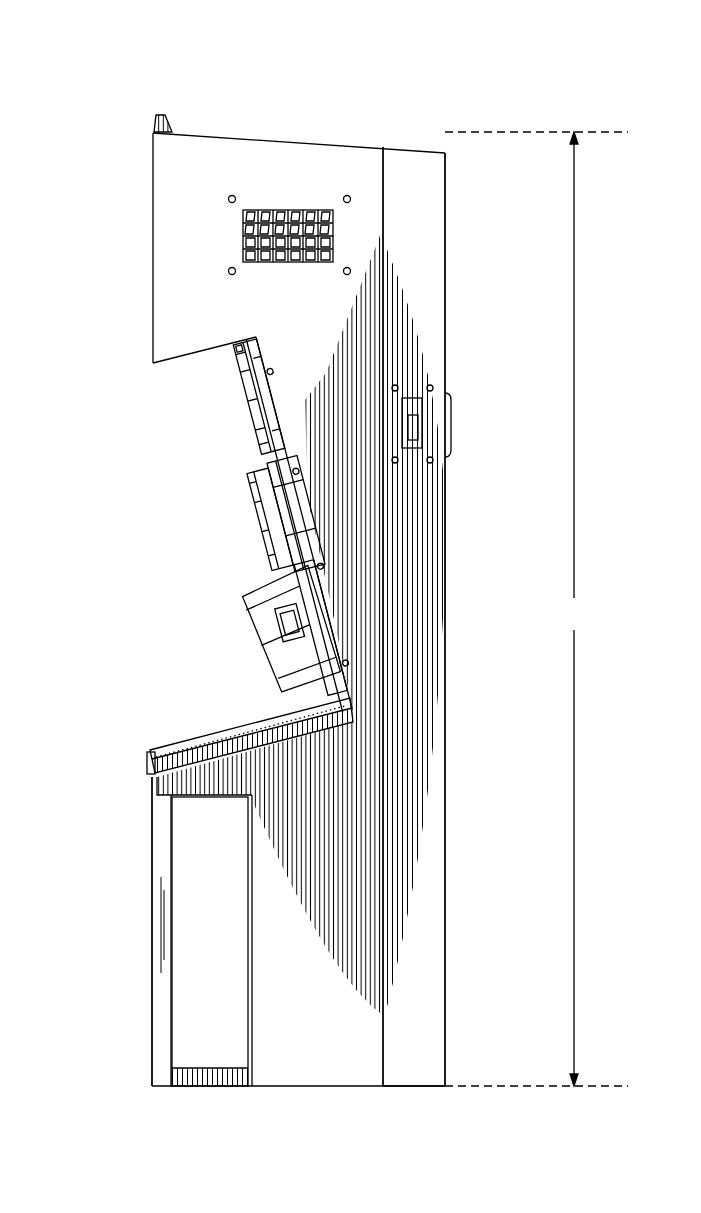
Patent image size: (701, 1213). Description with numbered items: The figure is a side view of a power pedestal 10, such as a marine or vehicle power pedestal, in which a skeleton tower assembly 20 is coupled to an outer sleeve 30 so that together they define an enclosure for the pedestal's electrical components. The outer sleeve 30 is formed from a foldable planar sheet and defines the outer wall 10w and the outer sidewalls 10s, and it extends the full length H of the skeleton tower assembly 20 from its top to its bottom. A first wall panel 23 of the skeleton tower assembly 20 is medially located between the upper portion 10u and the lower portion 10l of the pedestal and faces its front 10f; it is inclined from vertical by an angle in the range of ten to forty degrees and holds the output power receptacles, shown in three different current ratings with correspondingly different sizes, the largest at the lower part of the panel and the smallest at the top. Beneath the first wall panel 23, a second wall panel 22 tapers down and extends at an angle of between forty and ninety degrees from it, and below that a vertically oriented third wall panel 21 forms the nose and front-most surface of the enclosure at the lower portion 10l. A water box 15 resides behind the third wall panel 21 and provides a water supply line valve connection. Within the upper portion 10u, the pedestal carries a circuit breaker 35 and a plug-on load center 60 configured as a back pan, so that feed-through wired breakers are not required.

The power pedestal 10 is at (272, 72).
The upper portion 10u is at (172, 255).
The outer wall 10w is at (400, 577).
The outer sidewalls 10s is at (336, 994).
The front 10f is at (148, 880).
The lower portion 10l is at (413, 1003).
The water box 15 is at (210, 995).
The skeleton tower assembly 20 is at (167, 691).
The third wall panel 21 is at (150, 925).
The second wall panel 22 is at (188, 741).
The first wall panel 23 is at (263, 453).
The outer sleeve 30 is at (415, 275).
The circuit breaker 35 is at (425, 410).
The load center 60 is at (305, 210).
The length H is at (536, 609).